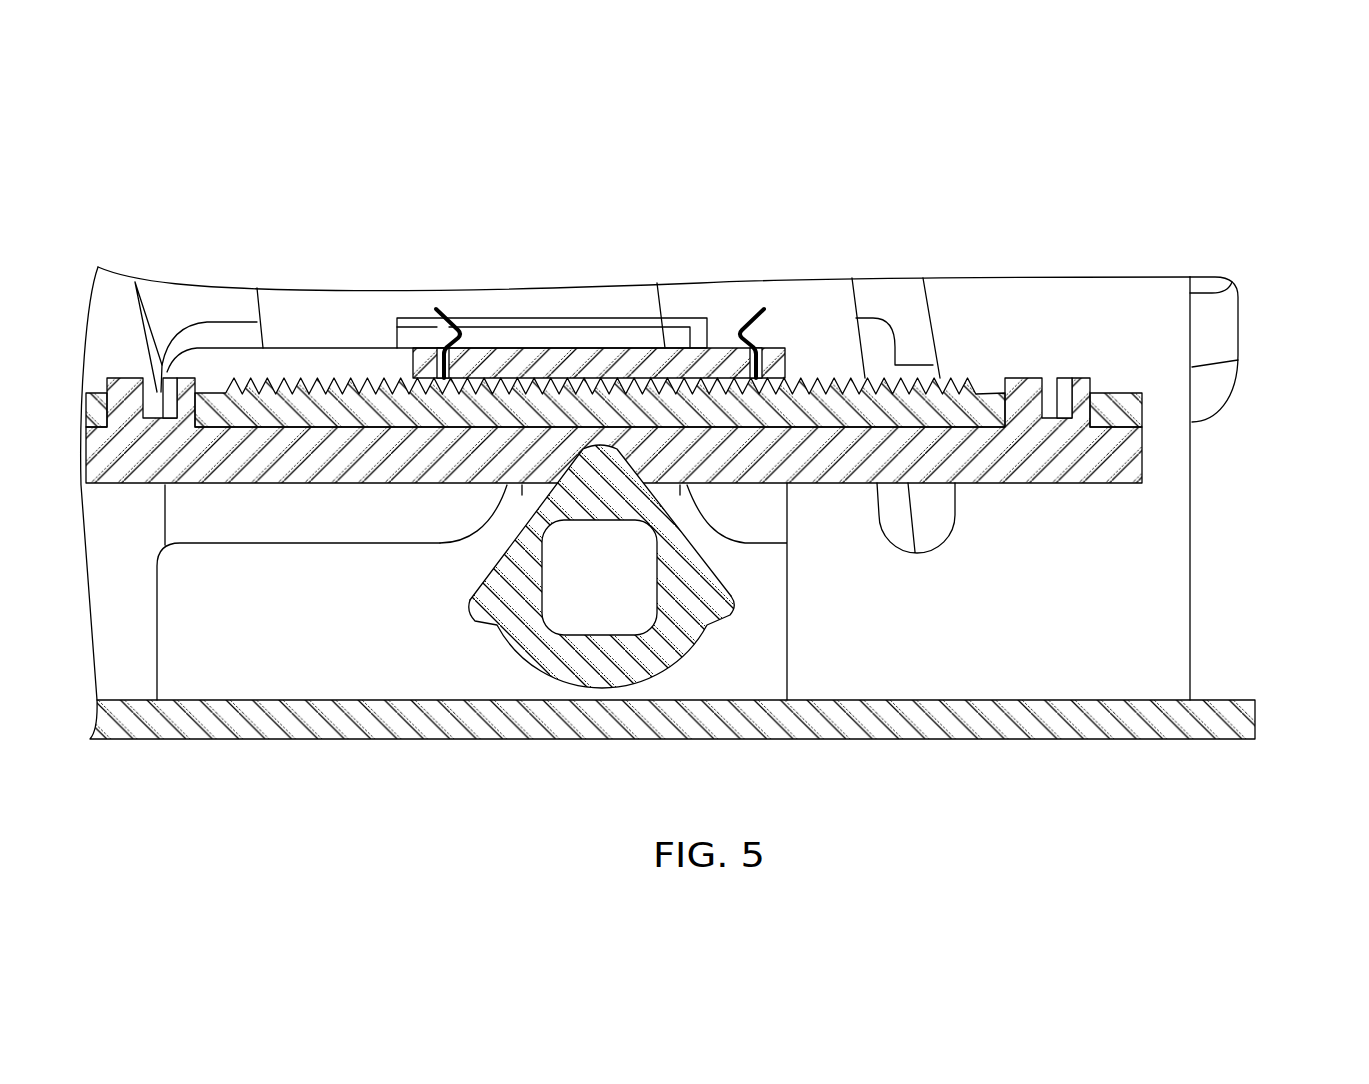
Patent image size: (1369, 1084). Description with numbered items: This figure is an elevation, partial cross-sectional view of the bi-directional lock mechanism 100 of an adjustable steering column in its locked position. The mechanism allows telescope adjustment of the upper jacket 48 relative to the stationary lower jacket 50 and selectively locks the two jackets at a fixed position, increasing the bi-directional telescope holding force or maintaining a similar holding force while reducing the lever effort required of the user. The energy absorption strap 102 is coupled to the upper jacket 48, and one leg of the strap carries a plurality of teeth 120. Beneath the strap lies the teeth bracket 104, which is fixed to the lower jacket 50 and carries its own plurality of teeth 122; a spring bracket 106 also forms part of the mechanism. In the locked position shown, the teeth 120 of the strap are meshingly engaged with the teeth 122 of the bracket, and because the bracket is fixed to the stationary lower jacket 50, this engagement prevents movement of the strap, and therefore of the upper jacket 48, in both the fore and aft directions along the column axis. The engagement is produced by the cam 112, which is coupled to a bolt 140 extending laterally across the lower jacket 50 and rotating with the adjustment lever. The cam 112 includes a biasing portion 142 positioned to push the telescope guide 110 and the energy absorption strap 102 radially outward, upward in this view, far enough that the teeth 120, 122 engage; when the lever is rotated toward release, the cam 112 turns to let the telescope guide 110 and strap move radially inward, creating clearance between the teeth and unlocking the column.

The bi-directional lock mechanism 100 is at (288, 234).
The lower jacket 50 is at (1123, 293).
The upper jacket 48 is at (1237, 722).
The energy absorption strap 102 is at (1120, 412).
The teeth bracket 104 is at (505, 363).
The spring bracket 106 is at (763, 310).
The telescope guide 110 is at (690, 403).
The cam 112 is at (497, 577).
The plurality of teeth 120 is at (918, 380).
The plurality of teeth 122 is at (653, 383).
The bolt 140 is at (600, 563).
The biasing portion 142 is at (597, 458).